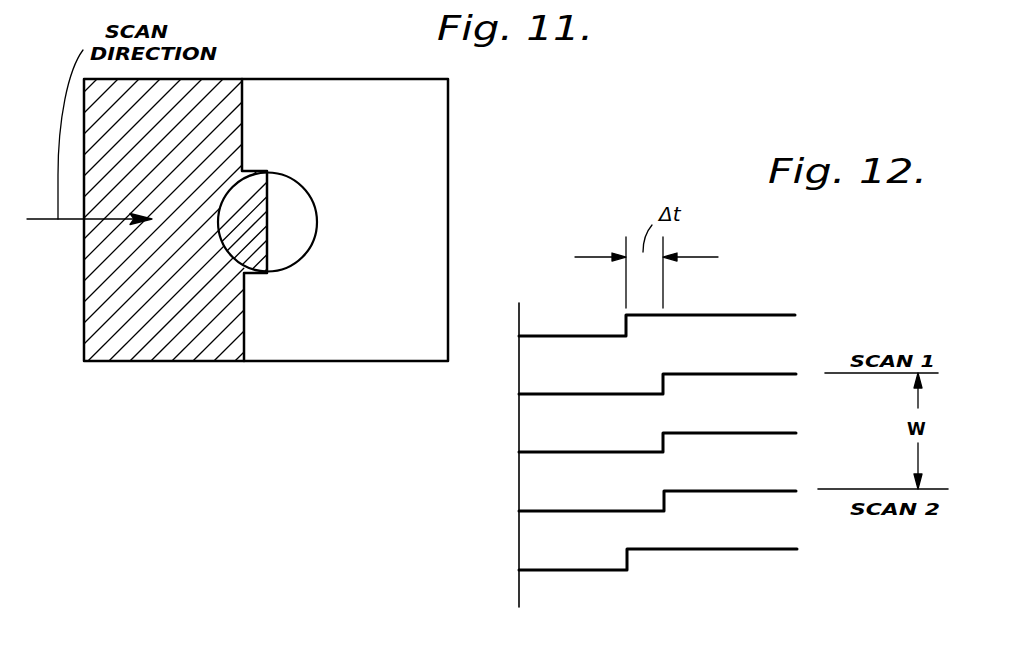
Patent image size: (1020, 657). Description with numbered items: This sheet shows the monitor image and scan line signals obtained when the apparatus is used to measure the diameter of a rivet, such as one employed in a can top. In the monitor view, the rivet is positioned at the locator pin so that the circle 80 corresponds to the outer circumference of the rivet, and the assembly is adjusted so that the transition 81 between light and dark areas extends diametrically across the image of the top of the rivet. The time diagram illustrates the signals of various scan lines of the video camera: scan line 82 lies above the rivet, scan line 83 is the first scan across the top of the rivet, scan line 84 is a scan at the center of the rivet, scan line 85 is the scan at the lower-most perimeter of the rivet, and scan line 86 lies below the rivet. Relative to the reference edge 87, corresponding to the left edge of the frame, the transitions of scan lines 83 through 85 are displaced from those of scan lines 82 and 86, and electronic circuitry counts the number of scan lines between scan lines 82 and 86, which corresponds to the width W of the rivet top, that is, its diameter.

In FIG. 11, the circle 80 is at (297, 178).
In FIG. 11, the transition 81 is at (268, 215).
In FIG. 12, the scan line 82 is at (558, 333).
In FIG. 12, the scan line 83 is at (550, 392).
In FIG. 12, the scan line 84 is at (563, 450).
In FIG. 12, the scan line 85 is at (550, 510).
In FIG. 12, the scan line 86 is at (540, 568).
In FIG. 12, the reference edge 87 is at (518, 482).